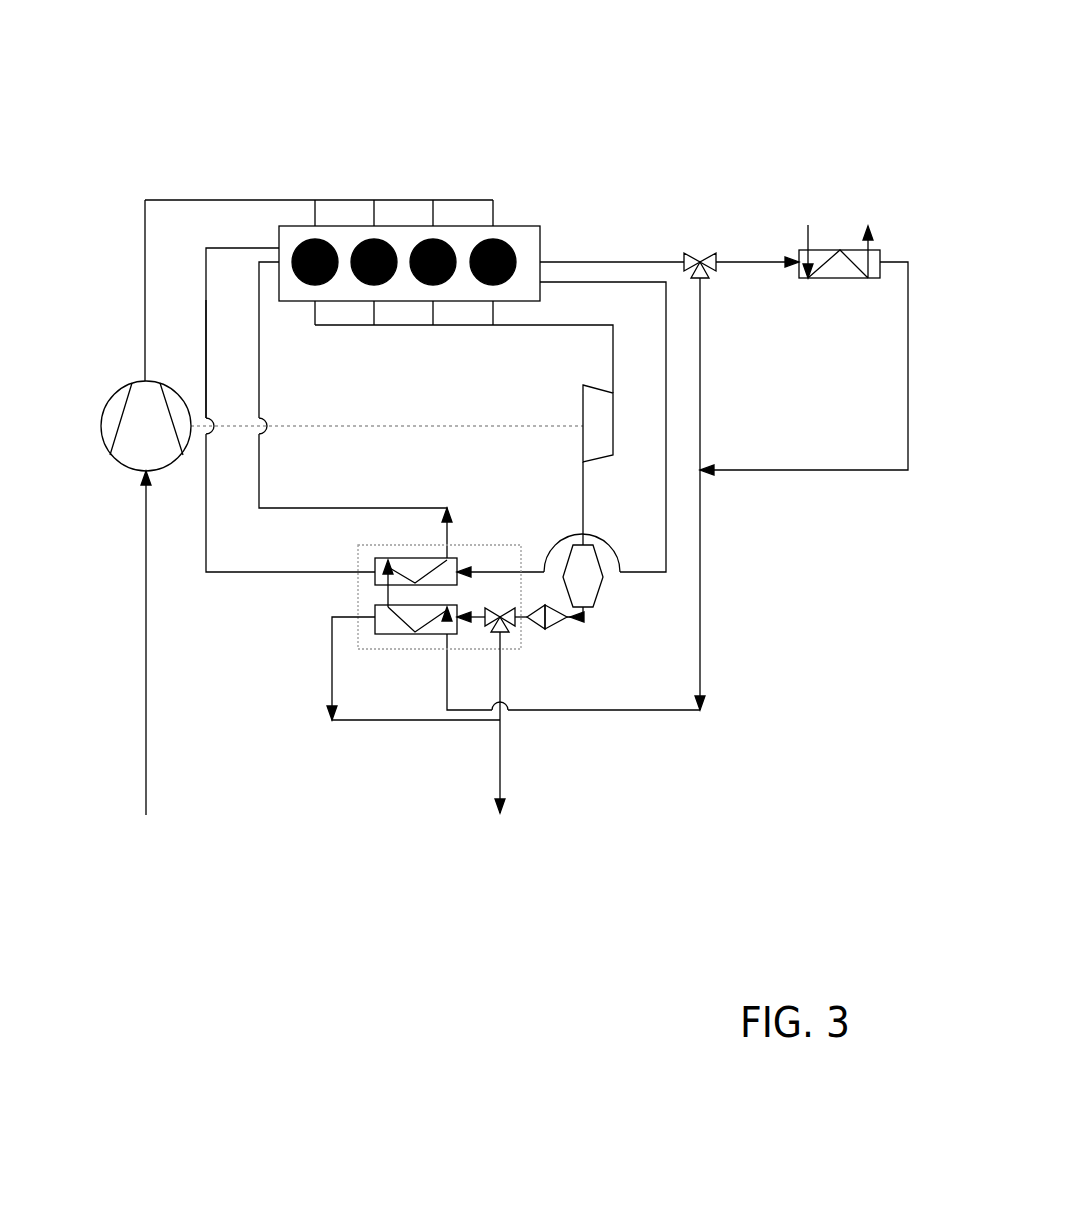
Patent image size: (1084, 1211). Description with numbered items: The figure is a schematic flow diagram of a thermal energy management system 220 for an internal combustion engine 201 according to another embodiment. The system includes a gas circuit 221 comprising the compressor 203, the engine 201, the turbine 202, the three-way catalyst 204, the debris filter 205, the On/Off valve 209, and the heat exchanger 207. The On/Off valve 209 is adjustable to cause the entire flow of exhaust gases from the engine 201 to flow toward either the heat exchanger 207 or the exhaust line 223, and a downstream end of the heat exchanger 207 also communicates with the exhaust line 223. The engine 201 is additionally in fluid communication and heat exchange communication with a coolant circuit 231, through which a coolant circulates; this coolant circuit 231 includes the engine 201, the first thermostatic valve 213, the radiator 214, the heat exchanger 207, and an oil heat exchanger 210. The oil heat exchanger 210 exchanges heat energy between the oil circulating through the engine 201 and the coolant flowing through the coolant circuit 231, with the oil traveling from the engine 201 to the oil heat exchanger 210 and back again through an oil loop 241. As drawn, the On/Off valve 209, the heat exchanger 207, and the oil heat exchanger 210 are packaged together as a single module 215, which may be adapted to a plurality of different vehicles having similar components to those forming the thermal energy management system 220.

The internal combustion engine 201 is at (543, 232).
The turbine 202 is at (583, 416).
The compressor 203 is at (106, 398).
The 3-way catalyst 204 is at (603, 592).
The debris filter 205 is at (550, 630).
The heat exchanger 207 is at (388, 635).
The On/Off valve 209 is at (500, 610).
The oil heat exchanger 210 is at (375, 570).
The first thermostatic valve 213 is at (700, 258).
The radiator 214 is at (810, 284).
The module 215 is at (497, 544).
The thermal energy management system 220 is at (543, 85).
The gas circuit 221 is at (296, 190).
The exhaust line 223 is at (500, 787).
The coolant circuit 231 is at (633, 250).
The oil loop 241 is at (206, 355).